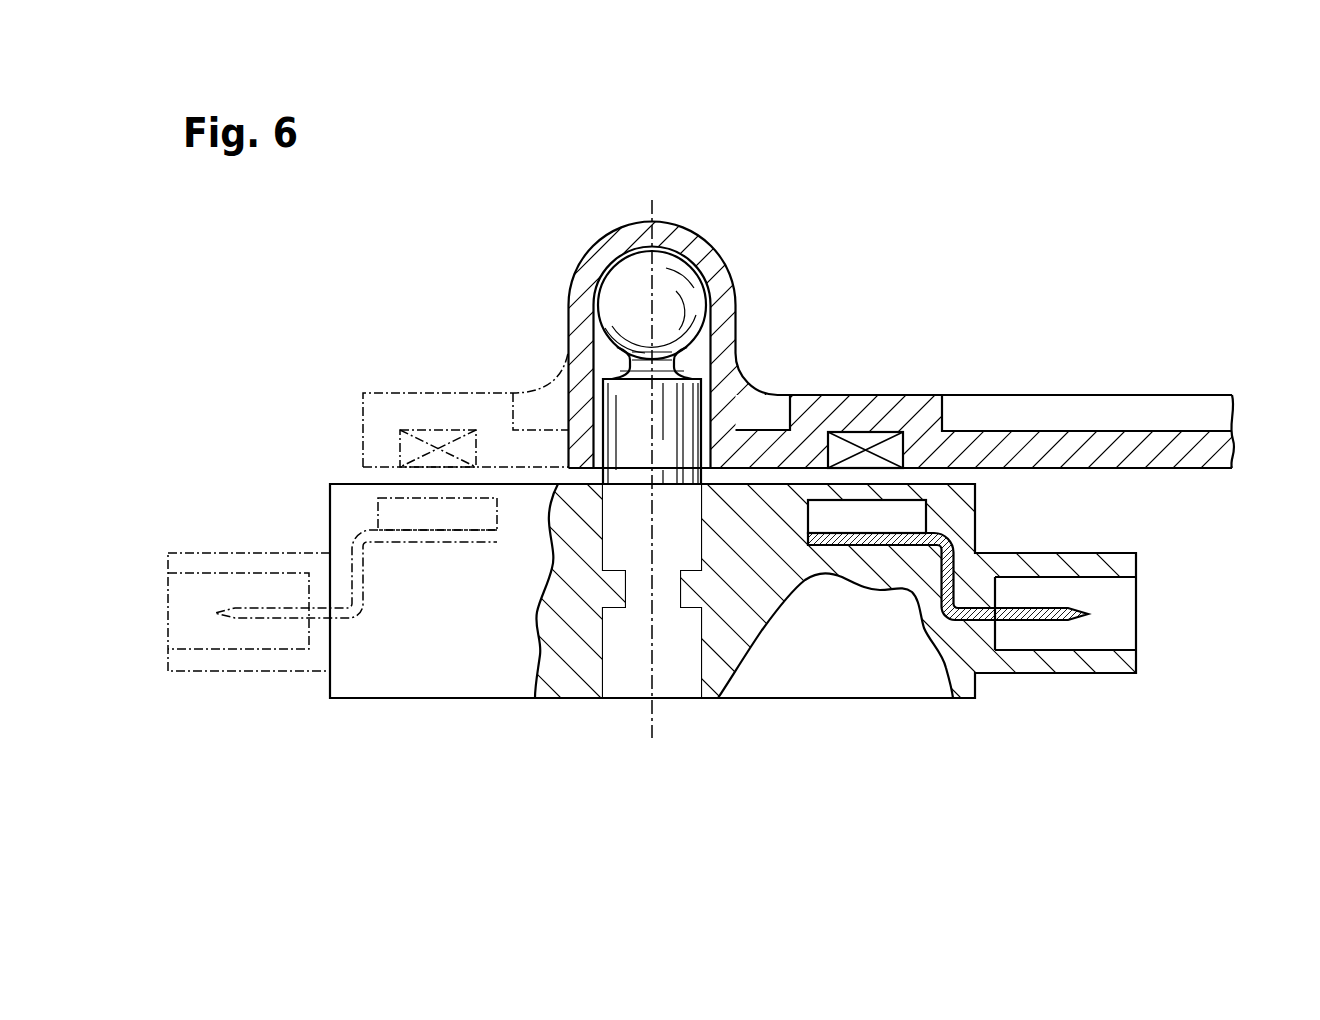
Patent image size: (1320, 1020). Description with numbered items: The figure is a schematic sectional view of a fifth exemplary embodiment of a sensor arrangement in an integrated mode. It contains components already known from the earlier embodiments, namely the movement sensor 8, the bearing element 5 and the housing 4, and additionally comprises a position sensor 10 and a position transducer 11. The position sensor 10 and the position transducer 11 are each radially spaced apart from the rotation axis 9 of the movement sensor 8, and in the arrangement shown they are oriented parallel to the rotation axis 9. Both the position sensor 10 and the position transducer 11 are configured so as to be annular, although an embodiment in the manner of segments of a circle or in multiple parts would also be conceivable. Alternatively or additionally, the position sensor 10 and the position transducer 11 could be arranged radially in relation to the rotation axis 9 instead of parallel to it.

The housing 4 is at (430, 682).
The bearing element 5 is at (617, 272).
The movement sensor 8 is at (1127, 440).
The rotation axis 9 is at (652, 713).
The position sensor 10 is at (908, 517).
The position transducer 11 is at (868, 440).